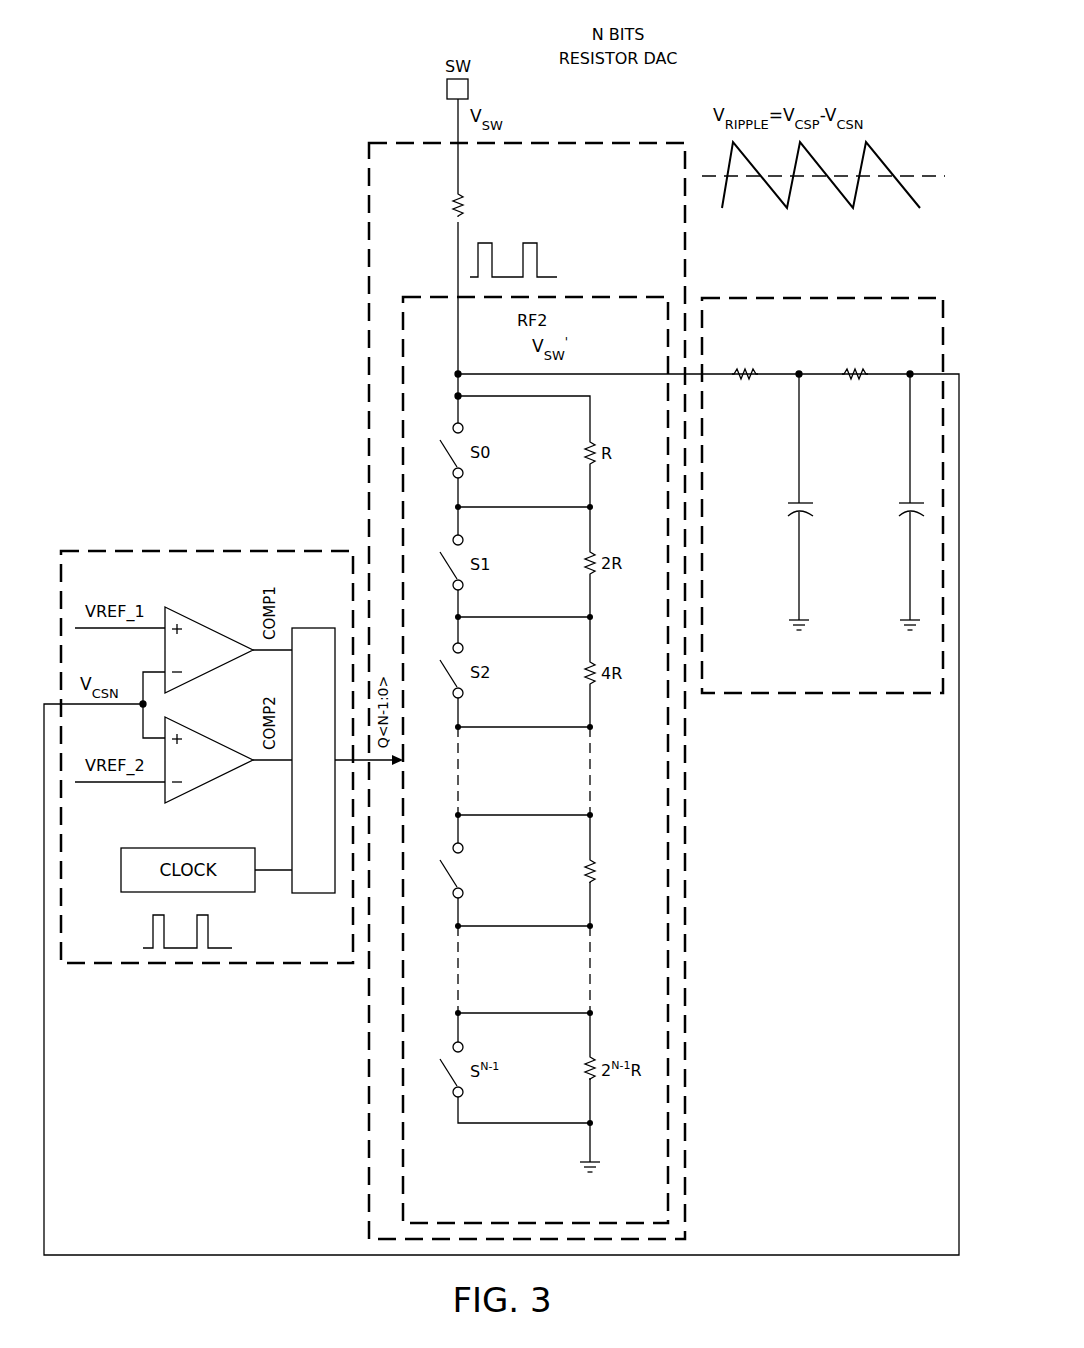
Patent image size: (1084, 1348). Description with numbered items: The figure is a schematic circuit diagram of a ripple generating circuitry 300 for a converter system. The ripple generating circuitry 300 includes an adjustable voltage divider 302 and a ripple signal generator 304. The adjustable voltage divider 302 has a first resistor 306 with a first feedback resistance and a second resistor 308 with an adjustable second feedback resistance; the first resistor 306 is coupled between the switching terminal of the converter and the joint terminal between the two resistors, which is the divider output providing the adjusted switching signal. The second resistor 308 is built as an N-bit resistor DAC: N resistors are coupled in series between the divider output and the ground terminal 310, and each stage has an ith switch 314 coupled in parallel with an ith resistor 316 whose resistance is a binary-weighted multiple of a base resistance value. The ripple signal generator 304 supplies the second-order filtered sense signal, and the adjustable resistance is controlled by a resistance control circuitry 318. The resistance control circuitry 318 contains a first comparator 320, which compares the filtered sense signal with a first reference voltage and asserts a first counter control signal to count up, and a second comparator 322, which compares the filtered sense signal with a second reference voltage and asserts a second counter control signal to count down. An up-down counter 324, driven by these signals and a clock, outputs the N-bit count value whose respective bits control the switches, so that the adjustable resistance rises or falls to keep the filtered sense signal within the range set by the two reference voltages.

The ripple generating circuitry 300 is at (288, 52).
The adjustable voltage divider 302 is at (601, 139).
The ripple signal generator 304 is at (864, 294).
The first resistor 306 is at (452, 207).
The second resistor 308 is at (587, 294).
The ground terminal 310 is at (578, 1170).
The ith switch 314 is at (446, 872).
The ith resistor 316 is at (585, 871).
The resistance control circuitry 318 is at (190, 547).
The first comparator 320 is at (209, 627).
The second comparator 322 is at (210, 786).
The up-down counter 324 is at (313, 895).